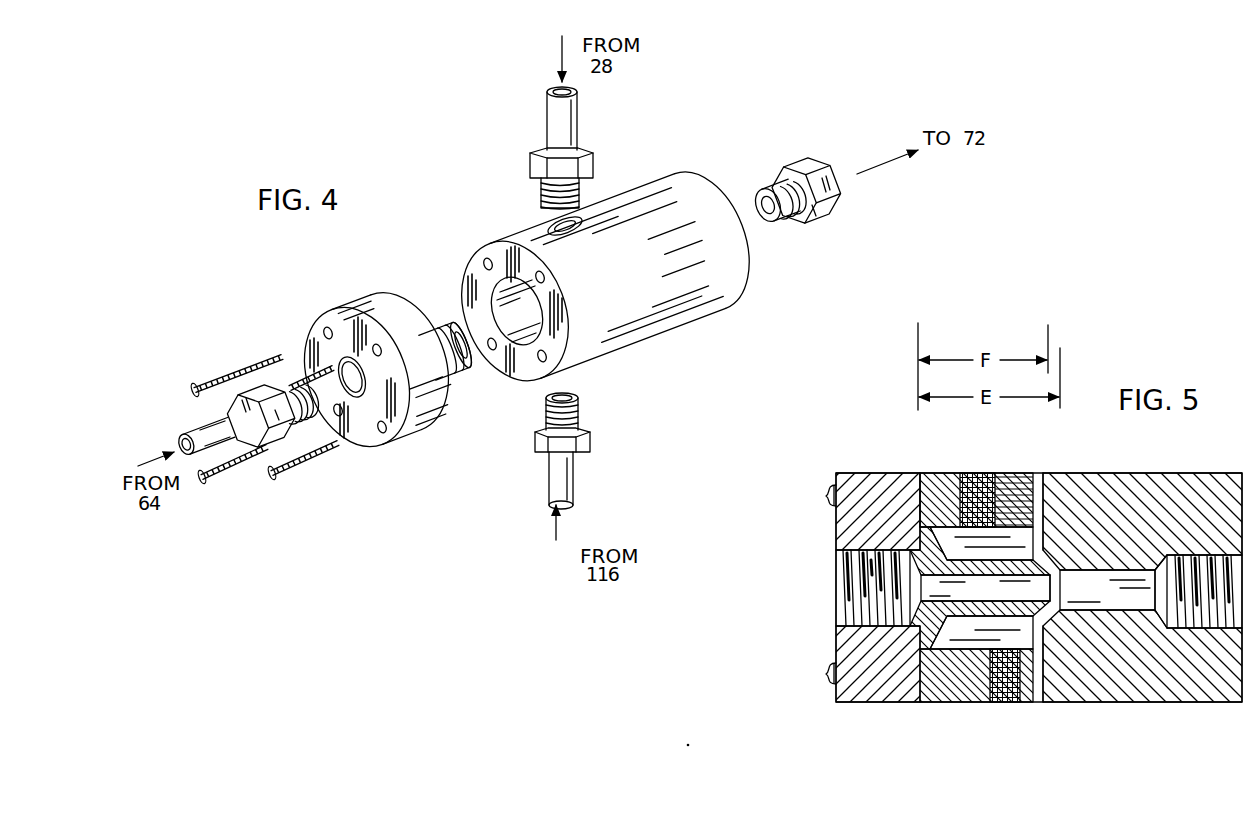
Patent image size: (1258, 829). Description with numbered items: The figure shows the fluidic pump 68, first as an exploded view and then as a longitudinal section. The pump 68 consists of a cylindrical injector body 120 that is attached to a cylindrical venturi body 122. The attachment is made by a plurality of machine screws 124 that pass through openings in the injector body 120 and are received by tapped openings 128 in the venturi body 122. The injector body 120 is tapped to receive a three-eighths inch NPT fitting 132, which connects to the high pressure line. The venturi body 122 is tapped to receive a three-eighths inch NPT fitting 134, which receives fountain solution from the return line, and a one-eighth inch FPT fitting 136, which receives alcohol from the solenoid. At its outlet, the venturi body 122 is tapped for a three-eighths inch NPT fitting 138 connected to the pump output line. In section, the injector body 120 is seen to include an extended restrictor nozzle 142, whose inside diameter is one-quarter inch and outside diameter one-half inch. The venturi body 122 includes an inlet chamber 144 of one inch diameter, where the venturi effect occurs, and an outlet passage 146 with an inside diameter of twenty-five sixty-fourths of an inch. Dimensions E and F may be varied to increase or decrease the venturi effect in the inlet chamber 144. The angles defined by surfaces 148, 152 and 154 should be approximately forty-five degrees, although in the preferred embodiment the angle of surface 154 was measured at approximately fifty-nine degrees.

In FIG. 4, the fluidic pump 68 is at (480, 194).
In FIG. 4, the injector body 120 is at (410, 437).
In FIG. 5, the injector body 120 is at (857, 482).
In FIG. 4, the venturi body 122 is at (688, 308).
In FIG. 4, the machine screws 124 is at (236, 375).
In FIG. 5, the machine screws 124 is at (828, 491).
In FIG. 4, the tapped openings 128 is at (473, 268).
In FIG. 4, the NPT fitting 132 is at (200, 426).
In FIG. 4, the NPT fitting 134 is at (589, 151).
In FIG. 4, the FPT fitting 136 is at (580, 432).
In FIG. 4, the NPT fitting 138 is at (798, 165).
In FIG. 4, the restrictor nozzle 142 is at (443, 322).
In FIG. 5, the restrictor nozzle 142 is at (1036, 594).
In FIG. 5, the inlet chamber 144 is at (1021, 555).
In FIG. 5, the outlet passage 146 is at (1136, 604).
In FIG. 5, the surface 148 is at (927, 520).
In FIG. 4, the surface 152 is at (462, 348).
In FIG. 5, the surface 152 is at (1062, 569).
In FIG. 5, the surface 154 is at (1044, 550).